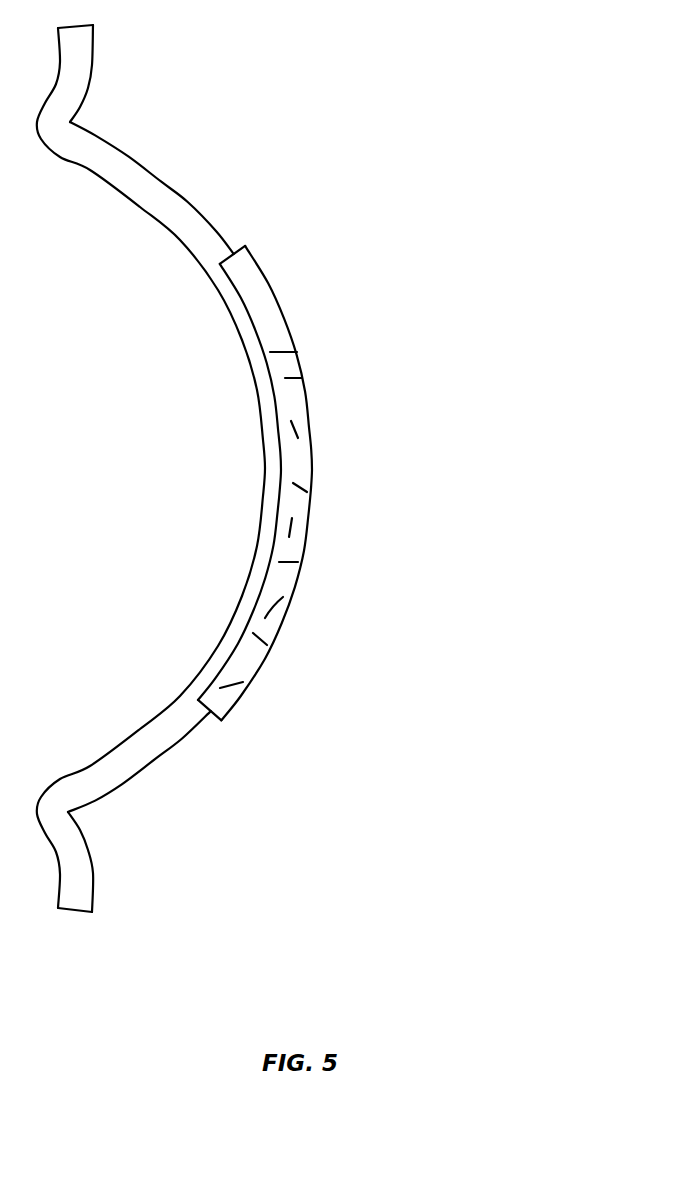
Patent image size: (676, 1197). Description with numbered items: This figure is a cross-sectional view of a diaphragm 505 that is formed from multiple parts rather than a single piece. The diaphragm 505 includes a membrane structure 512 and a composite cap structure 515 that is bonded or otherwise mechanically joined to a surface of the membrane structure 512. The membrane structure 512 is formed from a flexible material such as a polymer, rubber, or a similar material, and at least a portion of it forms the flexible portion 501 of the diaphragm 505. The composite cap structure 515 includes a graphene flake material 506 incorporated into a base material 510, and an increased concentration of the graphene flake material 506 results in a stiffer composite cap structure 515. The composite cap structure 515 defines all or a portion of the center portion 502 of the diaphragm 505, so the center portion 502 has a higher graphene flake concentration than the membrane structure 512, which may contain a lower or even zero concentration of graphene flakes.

The diaphragm 505 is at (557, 96).
The flexible portion 501 is at (415, 22).
The center portion 502 is at (415, 193).
The composite cap structure 515 is at (267, 282).
The graphene flake material 506 is at (297, 352).
The base material 510 is at (314, 477).
The membrane structure 512 is at (77, 768).